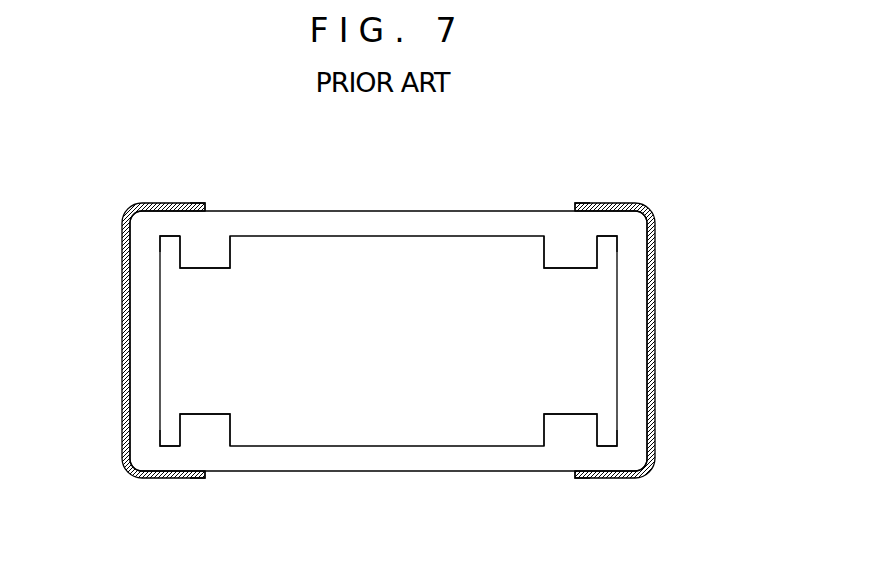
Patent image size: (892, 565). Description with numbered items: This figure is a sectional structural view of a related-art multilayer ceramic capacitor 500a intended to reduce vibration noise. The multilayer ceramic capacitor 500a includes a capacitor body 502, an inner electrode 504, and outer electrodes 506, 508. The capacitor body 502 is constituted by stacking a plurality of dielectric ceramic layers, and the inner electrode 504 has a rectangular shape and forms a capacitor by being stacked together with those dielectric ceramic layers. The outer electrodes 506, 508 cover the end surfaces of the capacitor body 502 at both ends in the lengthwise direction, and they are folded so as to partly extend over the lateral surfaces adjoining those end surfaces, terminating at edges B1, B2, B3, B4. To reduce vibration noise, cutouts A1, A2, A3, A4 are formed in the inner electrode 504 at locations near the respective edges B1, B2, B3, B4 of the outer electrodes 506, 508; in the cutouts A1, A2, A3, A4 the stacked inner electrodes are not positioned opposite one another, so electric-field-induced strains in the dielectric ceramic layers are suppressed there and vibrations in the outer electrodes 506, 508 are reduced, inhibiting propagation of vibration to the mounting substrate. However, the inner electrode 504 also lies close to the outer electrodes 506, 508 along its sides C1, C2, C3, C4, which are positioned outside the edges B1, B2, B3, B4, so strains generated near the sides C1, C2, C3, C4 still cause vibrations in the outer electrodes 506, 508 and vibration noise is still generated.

The multilayer ceramic capacitor 500a is at (188, 127).
The capacitor body 502 is at (388, 211).
The inner electrode 504 is at (593, 299).
The outer electrode 506 is at (122, 400).
The outer electrode 508 is at (655, 402).
The cutout A1 is at (207, 430).
The cutout A2 is at (207, 252).
The cutout A3 is at (570, 430).
The cutout A4 is at (570, 257).
The edge of outer electrode B1 is at (205, 478).
The edge of outer electrode B2 is at (206, 207).
The edge of outer electrode B3 is at (572, 478).
The edge of outer electrode B4 is at (572, 208).
The side of inner electrode C1 is at (168, 447).
The side of inner electrode C2 is at (168, 233).
The side of inner electrode C3 is at (608, 448).
The side of inner electrode C4 is at (607, 236).